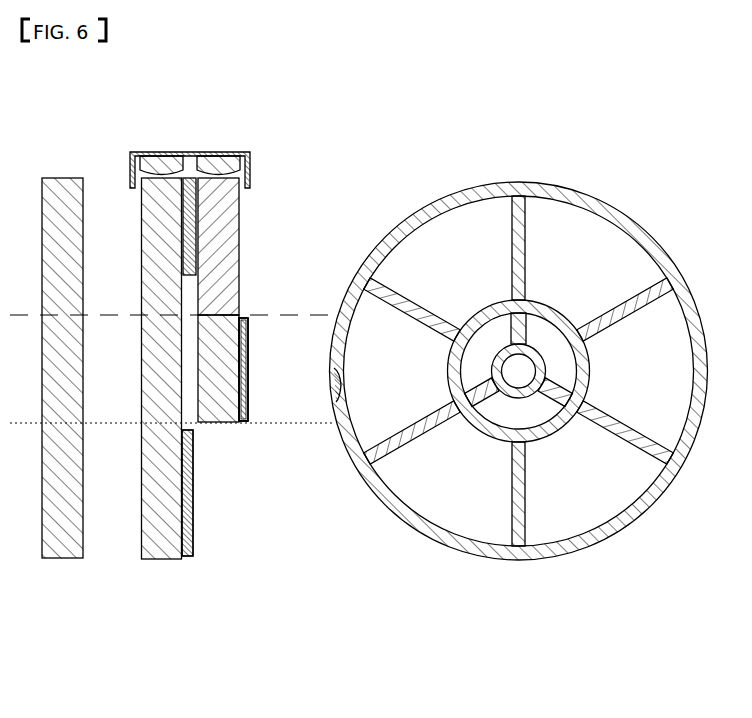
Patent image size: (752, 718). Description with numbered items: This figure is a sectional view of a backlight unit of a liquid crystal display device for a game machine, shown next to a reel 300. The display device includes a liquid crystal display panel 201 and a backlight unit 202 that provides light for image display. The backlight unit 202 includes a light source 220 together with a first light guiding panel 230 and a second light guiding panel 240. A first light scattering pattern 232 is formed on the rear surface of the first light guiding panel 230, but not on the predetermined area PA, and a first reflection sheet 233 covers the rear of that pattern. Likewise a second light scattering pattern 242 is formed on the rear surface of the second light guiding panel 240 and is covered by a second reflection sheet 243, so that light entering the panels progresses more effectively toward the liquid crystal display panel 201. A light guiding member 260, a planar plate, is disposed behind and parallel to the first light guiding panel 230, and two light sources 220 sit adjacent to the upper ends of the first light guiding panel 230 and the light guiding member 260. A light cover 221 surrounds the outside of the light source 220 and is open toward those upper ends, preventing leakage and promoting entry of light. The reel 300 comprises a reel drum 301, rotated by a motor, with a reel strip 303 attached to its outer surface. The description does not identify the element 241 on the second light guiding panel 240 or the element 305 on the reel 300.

The liquid crystal display panel 201 is at (62, 559).
The backlight unit 202 is at (171, 608).
The first light guiding panel 230 is at (141, 530).
The predetermined area PA is at (141, 385).
The light guiding member 260 is at (240, 228).
The second light guiding panel 240 is at (222, 424).
The side strip 241 is at (238, 315).
The second light scattering pattern 242 is at (248, 413).
The second reflection sheet 243 is at (248, 373).
The first light scattering pattern 232 is at (162, 533).
The first reflection sheet 233 is at (193, 540).
The light source 220 is at (167, 153).
The light cover 221 is at (245, 150).
The reel 300 is at (511, 381).
The reel drum 301 is at (497, 438).
The reel strip 303 is at (419, 522).
The protrusion 305 is at (334, 377).